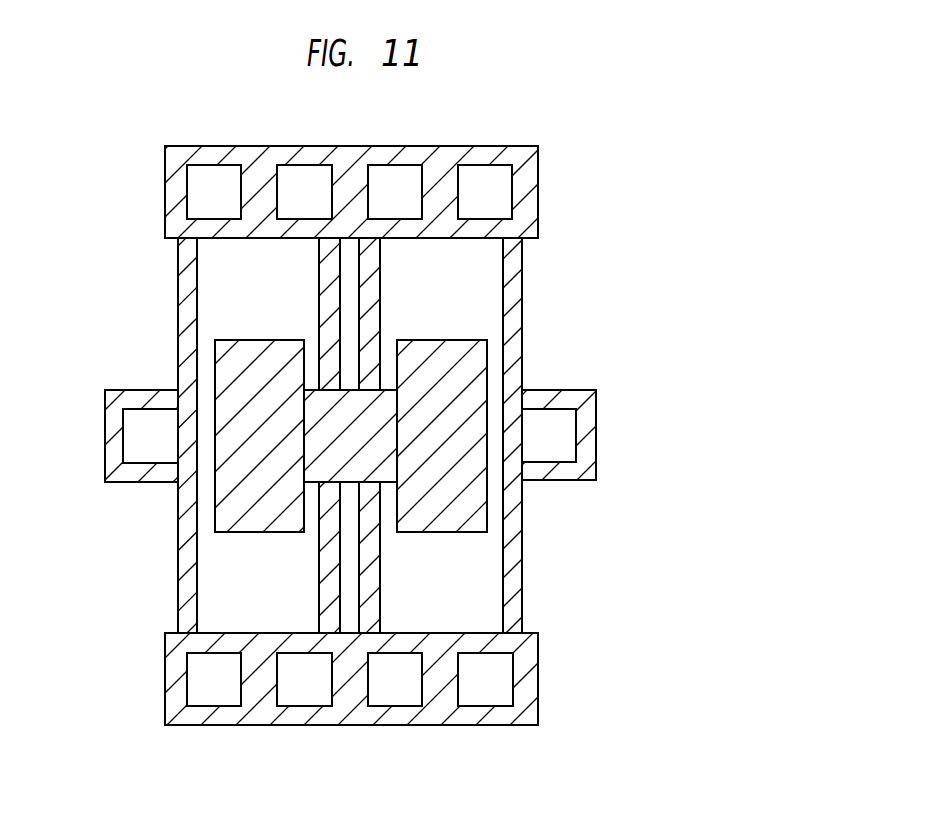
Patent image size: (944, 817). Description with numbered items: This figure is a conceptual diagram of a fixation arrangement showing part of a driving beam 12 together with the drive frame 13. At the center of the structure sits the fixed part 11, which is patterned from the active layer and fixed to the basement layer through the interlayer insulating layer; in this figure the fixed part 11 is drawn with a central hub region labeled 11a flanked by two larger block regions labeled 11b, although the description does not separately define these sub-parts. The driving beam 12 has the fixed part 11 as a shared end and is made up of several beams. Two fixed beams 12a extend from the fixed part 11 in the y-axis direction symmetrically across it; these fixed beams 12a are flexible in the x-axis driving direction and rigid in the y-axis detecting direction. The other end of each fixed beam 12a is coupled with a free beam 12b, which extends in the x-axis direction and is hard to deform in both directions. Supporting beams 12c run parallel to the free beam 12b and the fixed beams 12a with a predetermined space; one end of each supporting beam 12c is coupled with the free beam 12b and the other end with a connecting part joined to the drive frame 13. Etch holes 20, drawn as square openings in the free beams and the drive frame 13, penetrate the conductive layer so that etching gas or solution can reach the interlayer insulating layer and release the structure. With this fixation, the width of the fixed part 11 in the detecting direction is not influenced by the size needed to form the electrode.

The fixed part 11 is at (347, 441).
The rotor shaft hub 11a is at (315, 392).
The rotor block 11b is at (240, 358).
The driving beam 12 is at (141, 292).
The fixed beam 12a is at (373, 258).
The free beam 12b is at (529, 207).
The supporting beam 12c is at (515, 518).
The drive frame 13 is at (113, 455).
The etch hole 20 is at (483, 175).